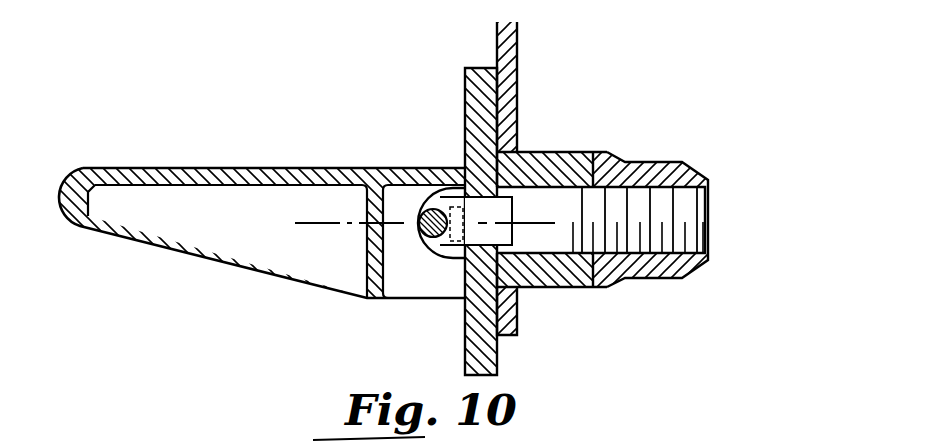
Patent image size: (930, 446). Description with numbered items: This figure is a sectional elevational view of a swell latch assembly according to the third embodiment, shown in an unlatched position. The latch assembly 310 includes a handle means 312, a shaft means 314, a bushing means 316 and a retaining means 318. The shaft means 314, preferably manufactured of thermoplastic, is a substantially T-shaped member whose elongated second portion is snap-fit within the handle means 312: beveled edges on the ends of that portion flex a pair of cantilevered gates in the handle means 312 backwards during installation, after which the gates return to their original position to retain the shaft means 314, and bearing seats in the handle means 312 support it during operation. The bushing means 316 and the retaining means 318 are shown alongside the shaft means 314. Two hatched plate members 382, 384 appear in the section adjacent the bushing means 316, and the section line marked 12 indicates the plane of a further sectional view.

The latch assembly 310 is at (660, 110).
The handle means 312 is at (190, 170).
The shaft means 314 is at (645, 202).
The bushing means 316 is at (560, 155).
The retaining means 318 is at (682, 270).
The first plate 382 is at (475, 98).
The second plate 384 is at (510, 50).
The section line 12- 12 is at (545, 320).